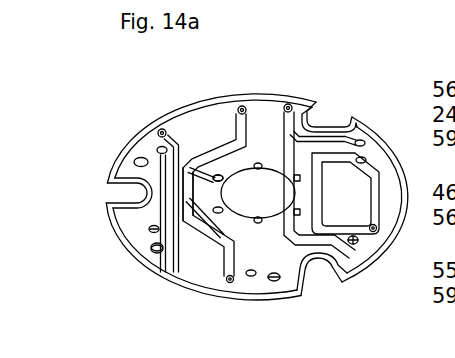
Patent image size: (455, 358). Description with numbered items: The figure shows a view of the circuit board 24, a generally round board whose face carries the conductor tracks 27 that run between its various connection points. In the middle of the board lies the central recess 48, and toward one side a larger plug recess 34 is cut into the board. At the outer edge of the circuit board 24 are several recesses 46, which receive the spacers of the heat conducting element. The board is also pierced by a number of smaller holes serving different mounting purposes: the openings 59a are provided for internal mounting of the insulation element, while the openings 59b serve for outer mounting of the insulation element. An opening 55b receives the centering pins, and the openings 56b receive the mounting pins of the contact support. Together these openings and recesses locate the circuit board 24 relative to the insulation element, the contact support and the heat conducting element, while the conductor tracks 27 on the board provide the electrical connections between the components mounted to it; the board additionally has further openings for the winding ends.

The circuit board 24 is at (157, 283).
The conductor tracks 27 is at (152, 128).
The plug recess 34 is at (347, 205).
The recesses 46 is at (133, 197).
The central recess 48 is at (250, 203).
The opening for the centering pins 55b is at (216, 207).
The openings for the mounting pins of the contact support 56b is at (140, 160).
The openings for internal mounting of the insulation element 59a is at (216, 176).
The openings for outer mounting of the insulation element 59b is at (157, 146).